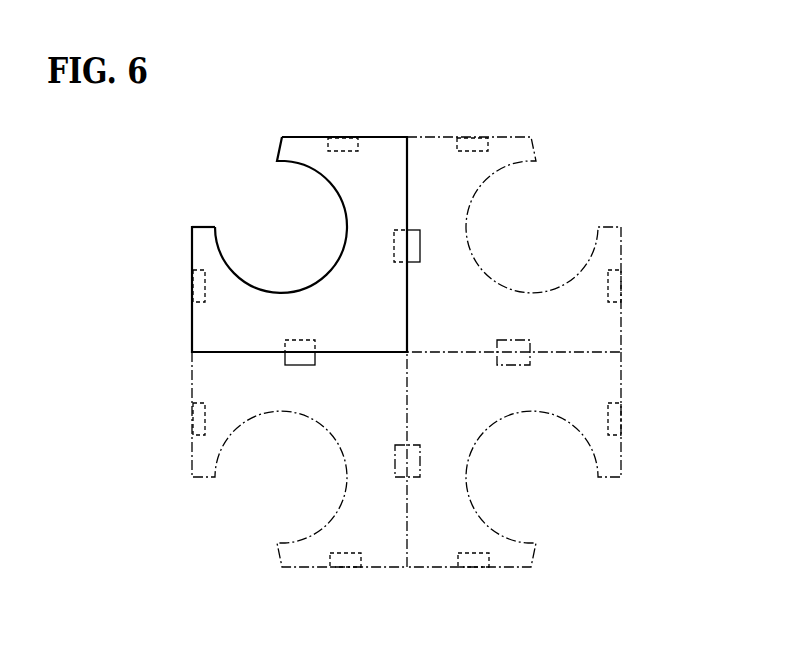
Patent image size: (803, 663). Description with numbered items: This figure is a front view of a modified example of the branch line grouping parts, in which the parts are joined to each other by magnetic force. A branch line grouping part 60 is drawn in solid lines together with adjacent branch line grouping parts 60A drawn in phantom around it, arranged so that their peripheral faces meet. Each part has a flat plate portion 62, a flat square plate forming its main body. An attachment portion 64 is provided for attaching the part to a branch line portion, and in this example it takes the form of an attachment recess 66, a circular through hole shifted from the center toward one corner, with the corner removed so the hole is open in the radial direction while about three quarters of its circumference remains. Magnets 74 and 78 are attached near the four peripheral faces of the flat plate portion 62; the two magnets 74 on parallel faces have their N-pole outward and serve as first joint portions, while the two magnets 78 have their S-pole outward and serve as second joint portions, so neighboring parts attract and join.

The branch line grouping part 60 is at (313, 134).
The branch line grouping part 60A is at (606, 249).
The flat plate portion 62 is at (322, 302).
The attachment portion 64 is at (284, 162).
The attachment recess 66 is at (250, 221).
The magnet 74 is at (343, 138).
The magnet 78 is at (398, 232).